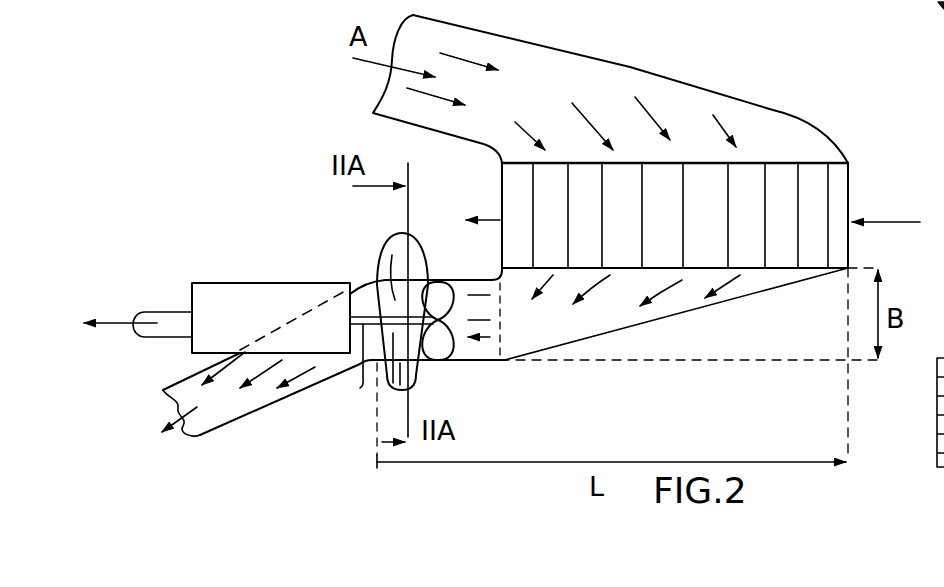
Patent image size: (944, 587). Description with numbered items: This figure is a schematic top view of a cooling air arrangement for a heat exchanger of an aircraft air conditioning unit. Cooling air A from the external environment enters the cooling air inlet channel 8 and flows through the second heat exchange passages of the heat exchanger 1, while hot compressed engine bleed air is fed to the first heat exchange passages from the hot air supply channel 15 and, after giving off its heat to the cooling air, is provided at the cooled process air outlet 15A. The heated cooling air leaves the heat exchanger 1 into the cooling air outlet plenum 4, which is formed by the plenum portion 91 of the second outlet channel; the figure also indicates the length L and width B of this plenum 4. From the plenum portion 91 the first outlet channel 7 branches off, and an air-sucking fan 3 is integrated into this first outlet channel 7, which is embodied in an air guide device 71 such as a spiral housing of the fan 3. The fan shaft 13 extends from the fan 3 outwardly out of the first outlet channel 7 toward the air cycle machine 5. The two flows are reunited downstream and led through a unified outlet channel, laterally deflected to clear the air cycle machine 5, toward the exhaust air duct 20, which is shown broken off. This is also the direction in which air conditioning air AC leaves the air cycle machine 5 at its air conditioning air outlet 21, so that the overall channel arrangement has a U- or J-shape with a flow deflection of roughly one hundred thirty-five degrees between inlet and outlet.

The heat exchanger 1 is at (838, 194).
The fan 3 is at (458, 352).
The cooling air outlet plenum 4 is at (625, 375).
The air cycle machine 5 is at (264, 283).
The first outlet channel 7 is at (483, 352).
The cooling air inlet channel 8 is at (695, 97).
The fan shaft 13 is at (382, 370).
The hot air supply channel 15 is at (920, 222).
The cooled process air outlet 15A is at (463, 220).
The exhaust air duct 20 is at (180, 409).
The air conditioning air outlet 21 is at (165, 310).
The air guide device 71 is at (392, 238).
The plenum portion 91 is at (650, 321).